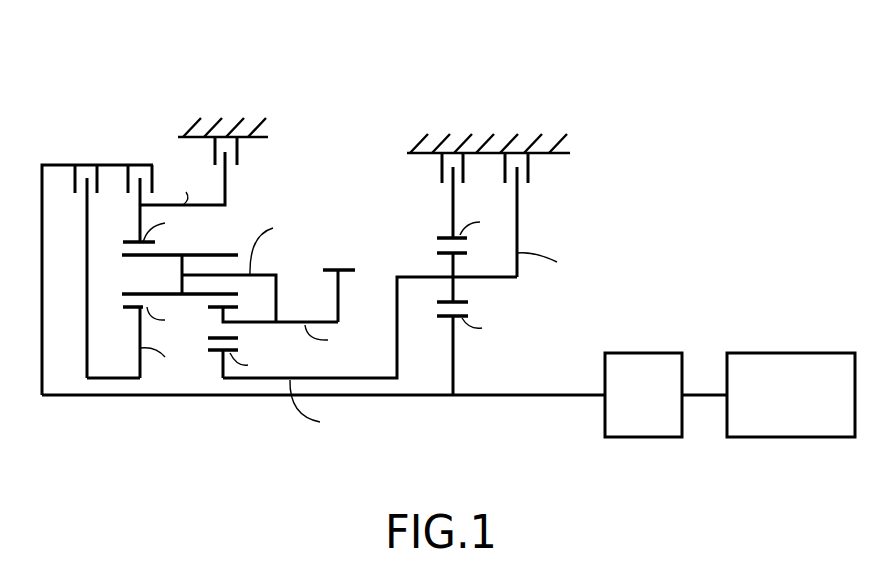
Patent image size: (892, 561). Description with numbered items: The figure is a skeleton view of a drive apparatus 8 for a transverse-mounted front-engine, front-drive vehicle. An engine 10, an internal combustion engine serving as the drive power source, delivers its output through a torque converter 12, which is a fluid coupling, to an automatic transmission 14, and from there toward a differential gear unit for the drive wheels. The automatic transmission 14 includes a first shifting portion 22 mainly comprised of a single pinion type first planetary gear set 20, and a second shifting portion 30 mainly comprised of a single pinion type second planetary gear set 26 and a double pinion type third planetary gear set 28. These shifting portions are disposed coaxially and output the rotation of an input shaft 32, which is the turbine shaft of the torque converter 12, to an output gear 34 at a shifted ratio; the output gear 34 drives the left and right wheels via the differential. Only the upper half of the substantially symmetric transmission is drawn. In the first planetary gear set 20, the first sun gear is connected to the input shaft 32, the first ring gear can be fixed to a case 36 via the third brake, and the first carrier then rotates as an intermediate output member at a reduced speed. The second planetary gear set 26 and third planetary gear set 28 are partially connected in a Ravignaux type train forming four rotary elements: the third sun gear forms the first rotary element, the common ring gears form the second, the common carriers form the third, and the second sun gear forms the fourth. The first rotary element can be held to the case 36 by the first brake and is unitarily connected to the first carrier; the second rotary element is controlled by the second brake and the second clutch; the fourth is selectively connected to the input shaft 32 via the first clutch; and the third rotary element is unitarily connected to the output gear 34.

The drive apparatus 8 is at (755, 168).
The engine 10 is at (772, 357).
The torque converter 12 is at (643, 357).
The automatic transmission 14 is at (547, 65).
The first planetary gear set 20 is at (447, 408).
The first shifting portion 22 is at (388, 165).
The second planetary gear set 26 is at (140, 398).
The third planetary gear set 28 is at (227, 398).
The second shifting portion 30 is at (292, 118).
The input shaft 32 is at (542, 395).
The output gear 34 is at (345, 267).
The case 36 is at (222, 122).